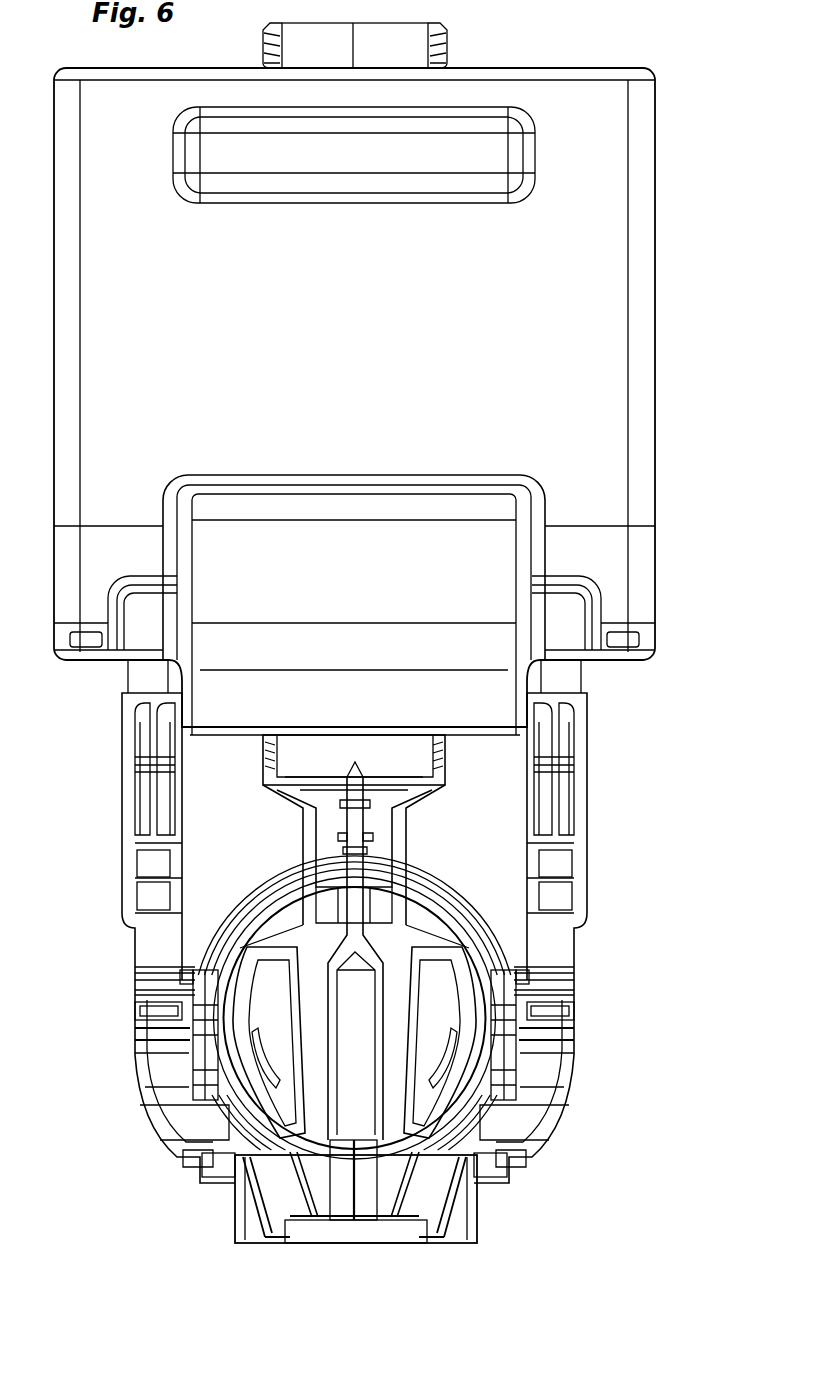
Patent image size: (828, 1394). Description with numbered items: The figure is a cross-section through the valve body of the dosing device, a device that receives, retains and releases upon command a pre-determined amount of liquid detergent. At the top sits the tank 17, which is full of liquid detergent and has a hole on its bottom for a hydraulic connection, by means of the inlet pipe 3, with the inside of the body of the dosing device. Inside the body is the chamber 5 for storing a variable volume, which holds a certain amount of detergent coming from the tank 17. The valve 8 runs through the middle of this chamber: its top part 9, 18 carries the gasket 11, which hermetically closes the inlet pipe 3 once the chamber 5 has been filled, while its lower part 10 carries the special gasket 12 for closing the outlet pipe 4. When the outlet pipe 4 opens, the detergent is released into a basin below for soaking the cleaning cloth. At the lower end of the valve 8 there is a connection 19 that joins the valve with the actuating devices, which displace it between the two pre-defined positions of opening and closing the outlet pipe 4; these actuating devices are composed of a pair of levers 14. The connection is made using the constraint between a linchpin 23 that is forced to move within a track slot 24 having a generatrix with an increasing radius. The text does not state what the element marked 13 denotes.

The tank 17 is at (597, 300).
The levers 14 is at (152, 845).
The inlet pipe 3 is at (380, 802).
The top part of the valve 18 is at (357, 875).
The gasket 11 is at (360, 823).
The top part of the valve 9 is at (430, 900).
The chamber 5 is at (273, 1002).
The valve 8 is at (380, 1010).
The connection 19 is at (239, 1195).
The lower part of the valve 10 is at (310, 1180).
The outlet pipe 4 is at (422, 1180).
The gasket 12 is at (413, 1223).
The seal ring 13 is at (352, 1242).
The linchpin 23 is at (216, 1183).
The track slot 24 is at (203, 1163).